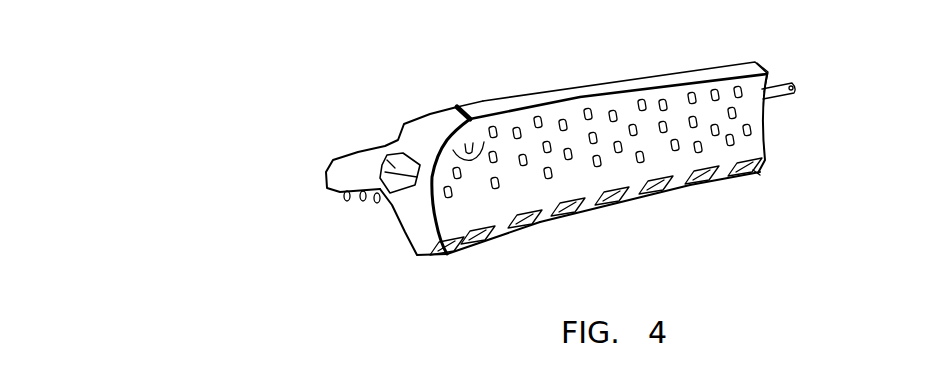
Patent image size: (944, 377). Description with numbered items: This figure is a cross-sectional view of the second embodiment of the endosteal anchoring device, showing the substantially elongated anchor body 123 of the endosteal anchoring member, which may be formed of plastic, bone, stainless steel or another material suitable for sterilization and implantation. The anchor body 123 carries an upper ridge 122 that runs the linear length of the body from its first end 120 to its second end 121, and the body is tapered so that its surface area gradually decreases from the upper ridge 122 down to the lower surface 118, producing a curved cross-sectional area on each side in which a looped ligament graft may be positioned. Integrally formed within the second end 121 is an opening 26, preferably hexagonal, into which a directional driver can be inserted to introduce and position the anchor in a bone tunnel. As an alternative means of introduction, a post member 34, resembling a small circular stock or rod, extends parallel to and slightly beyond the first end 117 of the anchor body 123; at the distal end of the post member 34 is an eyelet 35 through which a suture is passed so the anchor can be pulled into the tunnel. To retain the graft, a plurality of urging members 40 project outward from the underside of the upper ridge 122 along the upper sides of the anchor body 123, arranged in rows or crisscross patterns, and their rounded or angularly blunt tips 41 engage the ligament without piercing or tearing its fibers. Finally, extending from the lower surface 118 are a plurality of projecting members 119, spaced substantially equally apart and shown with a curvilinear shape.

The first end 117 is at (430, 113).
The second end 121 is at (413, 213).
The opening 26 is at (385, 175).
The upper ridge 122 is at (476, 158).
The anchor body 123 is at (677, 100).
The first end 120 is at (765, 142).
The post member 34 is at (775, 85).
The eyelet 35 is at (797, 87).
The urging members 40 is at (736, 111).
The blunt tips 41 is at (548, 128).
The lower surface 118 is at (533, 245).
The projecting members 119 is at (672, 203).